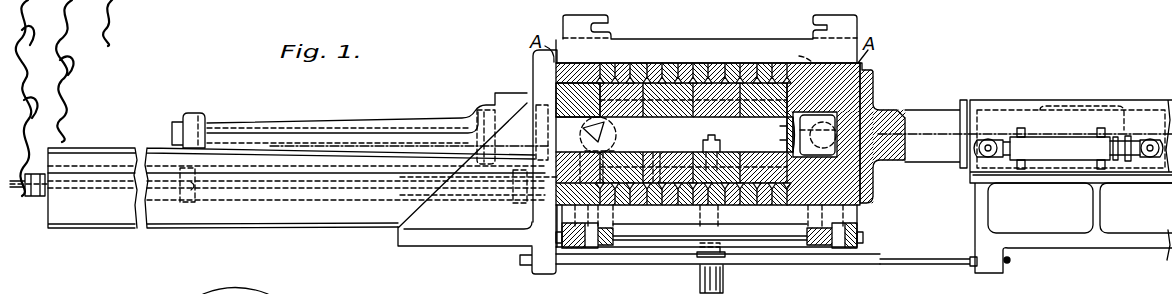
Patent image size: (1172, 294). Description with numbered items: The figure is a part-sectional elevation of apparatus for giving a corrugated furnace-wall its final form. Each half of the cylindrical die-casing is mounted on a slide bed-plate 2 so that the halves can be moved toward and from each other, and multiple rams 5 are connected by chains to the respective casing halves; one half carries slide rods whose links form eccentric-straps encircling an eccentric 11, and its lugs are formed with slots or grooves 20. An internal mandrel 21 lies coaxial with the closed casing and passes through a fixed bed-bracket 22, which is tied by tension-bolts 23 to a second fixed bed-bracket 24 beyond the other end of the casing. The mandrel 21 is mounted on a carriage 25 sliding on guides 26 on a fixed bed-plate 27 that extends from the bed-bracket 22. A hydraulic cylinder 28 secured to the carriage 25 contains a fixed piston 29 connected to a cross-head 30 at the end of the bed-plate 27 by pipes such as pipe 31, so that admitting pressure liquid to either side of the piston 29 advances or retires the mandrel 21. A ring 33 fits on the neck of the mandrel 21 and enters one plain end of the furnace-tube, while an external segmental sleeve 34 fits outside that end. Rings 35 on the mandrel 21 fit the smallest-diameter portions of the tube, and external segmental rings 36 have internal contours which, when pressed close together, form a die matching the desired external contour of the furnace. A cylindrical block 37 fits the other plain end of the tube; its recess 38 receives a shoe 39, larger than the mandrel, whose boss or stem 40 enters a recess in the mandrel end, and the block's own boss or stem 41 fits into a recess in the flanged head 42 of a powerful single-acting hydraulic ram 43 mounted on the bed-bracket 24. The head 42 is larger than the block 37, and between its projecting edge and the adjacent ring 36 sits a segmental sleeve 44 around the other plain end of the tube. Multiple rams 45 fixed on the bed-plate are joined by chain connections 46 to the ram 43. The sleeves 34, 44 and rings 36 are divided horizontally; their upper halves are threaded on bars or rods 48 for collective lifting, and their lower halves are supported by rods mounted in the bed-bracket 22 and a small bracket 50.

The slide bed-plate 2 is at (583, 247).
The multiple rams 5 is at (725, 255).
The eccentric 11 is at (736, 274).
The slots or grooves 20 is at (604, 27).
The internal mandrel 21 is at (703, 175).
The fixed bed-bracket 22 is at (477, 174).
The tension-bolts 23 is at (904, 262).
The fixed bed-bracket 24 is at (1071, 186).
The carriage 25 is at (349, 122).
The guides 26 is at (346, 187).
The fixed bed-plate 27 is at (346, 196).
The hydraulic cylinder 28 is at (387, 197).
The fixed piston 29 is at (205, 185).
The cross-head 30 is at (31, 192).
The pipe 31 is at (116, 187).
The ring 33 is at (578, 100).
The external segmental sleeve 34 is at (551, 200).
The rings 35 is at (591, 126).
The external segmental rings 36 is at (704, 63).
The cylindrical block 37 is at (870, 98).
The recess 38 is at (815, 134).
The shoe 39 is at (780, 126).
The boss or stem 40 is at (787, 140).
The boss or stem 41 is at (877, 160).
The flanged head 42 is at (898, 116).
The single-acting hydraulic ram 43 is at (950, 157).
The segmental sleeve 44 is at (866, 196).
The multiple rams 45 is at (1118, 143).
The chain connections 46 is at (945, 137).
The bars or rods 48 is at (799, 50).
The small bracket 50 is at (858, 228).